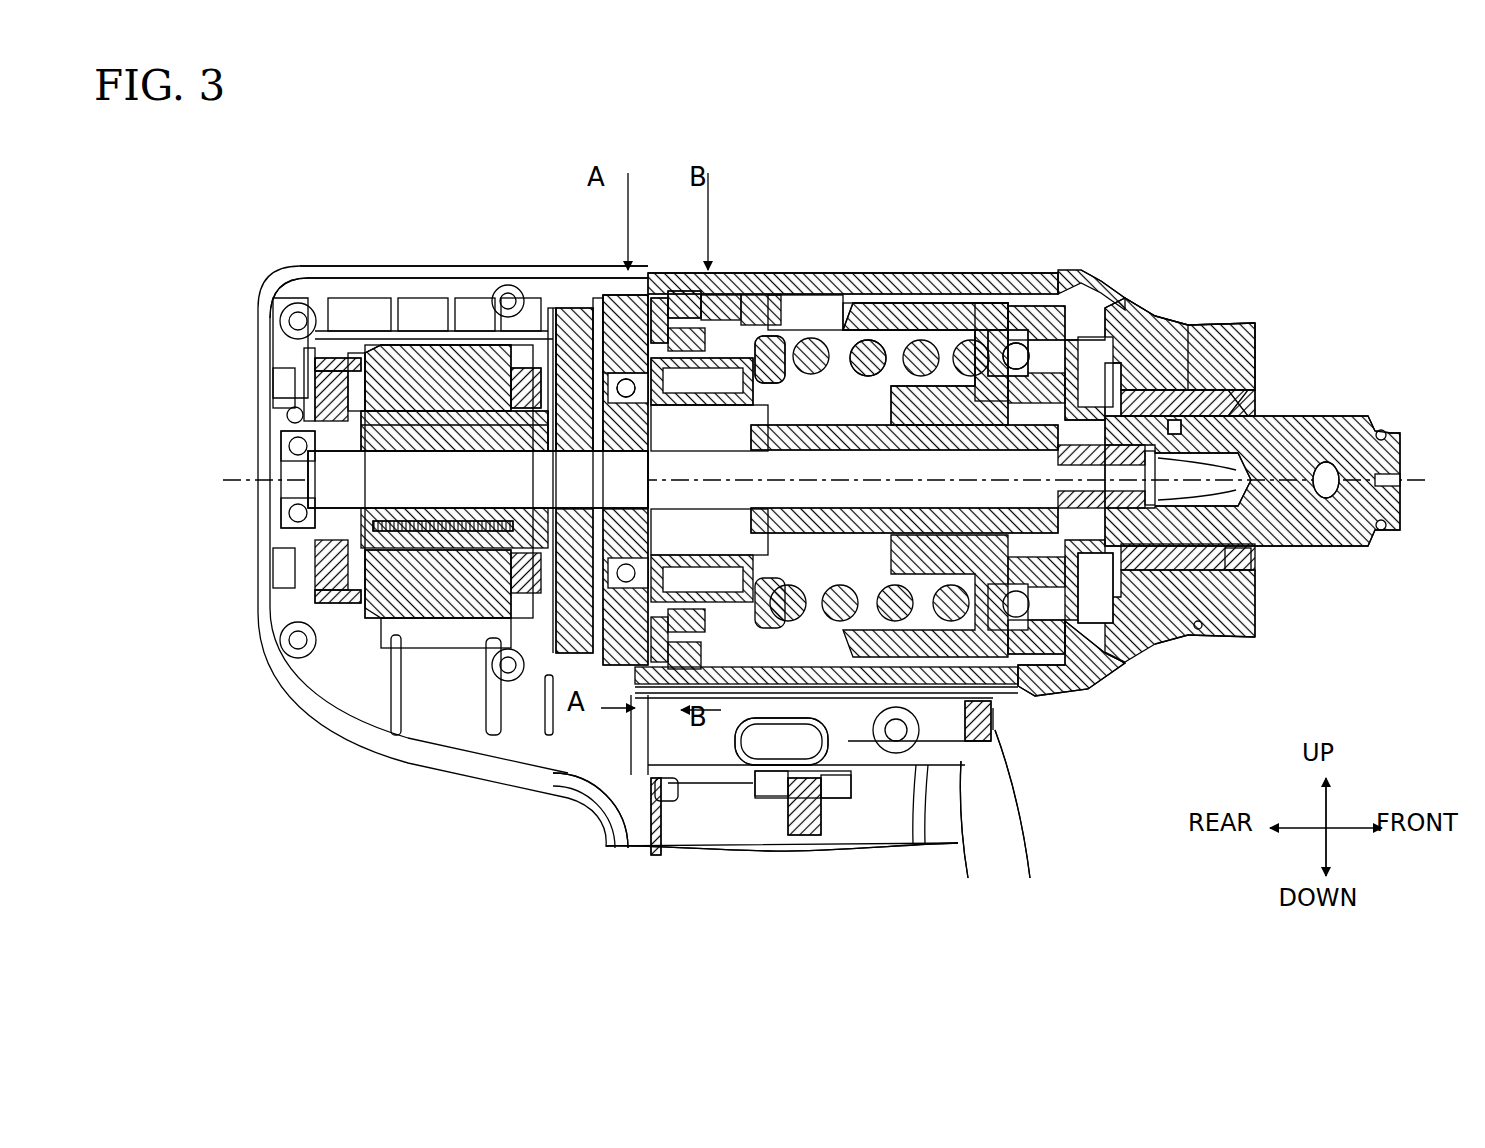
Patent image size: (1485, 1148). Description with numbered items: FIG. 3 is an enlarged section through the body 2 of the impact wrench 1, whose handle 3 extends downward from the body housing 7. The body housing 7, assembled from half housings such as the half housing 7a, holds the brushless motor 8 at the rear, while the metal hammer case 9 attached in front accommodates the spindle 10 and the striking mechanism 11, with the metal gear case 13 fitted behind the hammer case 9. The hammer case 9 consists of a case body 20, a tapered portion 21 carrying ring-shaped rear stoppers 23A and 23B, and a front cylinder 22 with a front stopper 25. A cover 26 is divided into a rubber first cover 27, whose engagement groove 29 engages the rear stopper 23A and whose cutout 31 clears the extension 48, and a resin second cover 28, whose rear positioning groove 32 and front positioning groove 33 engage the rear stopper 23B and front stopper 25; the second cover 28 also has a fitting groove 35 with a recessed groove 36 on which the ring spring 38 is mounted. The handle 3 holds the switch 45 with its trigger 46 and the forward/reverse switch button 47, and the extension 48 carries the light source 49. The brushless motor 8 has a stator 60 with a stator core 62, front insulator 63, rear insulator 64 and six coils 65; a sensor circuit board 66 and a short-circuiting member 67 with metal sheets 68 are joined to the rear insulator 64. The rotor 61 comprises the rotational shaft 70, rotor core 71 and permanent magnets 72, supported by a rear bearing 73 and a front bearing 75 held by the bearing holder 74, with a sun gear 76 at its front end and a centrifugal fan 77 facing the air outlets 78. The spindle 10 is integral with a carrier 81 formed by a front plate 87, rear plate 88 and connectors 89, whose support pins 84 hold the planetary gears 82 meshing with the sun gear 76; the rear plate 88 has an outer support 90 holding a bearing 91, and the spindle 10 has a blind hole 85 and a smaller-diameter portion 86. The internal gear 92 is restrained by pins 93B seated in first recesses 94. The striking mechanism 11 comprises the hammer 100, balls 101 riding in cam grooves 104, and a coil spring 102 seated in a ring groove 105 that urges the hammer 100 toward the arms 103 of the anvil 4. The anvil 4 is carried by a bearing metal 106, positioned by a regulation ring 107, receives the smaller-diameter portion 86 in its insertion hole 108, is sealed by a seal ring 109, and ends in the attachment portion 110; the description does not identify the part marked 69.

The impact wrench 1 is at (850, 140).
The body 2 is at (790, 250).
The handle 3 is at (598, 835).
The anvil 4 is at (1290, 410).
The body housing 7 is at (396, 262).
The half housing 7a is at (275, 290).
The brushless motor 8 is at (428, 340).
The hammer case 9 is at (905, 265).
The spindle 10 is at (870, 290).
The striking mechanism 11 is at (960, 290).
The gear case 13 is at (620, 285).
The case body 20 is at (830, 300).
The tapered portion 21 is at (1090, 275).
The front cylinder 22 is at (1260, 360).
The rear stopper 23A is at (1120, 300).
The rear stopper 23B is at (1170, 340).
The front stopper 25 is at (1220, 340).
The cover 26 is at (1085, 295).
The first cover 27 is at (1000, 285).
The second cover 28 is at (1240, 340).
The engagement groove 29 is at (1110, 320).
The cutout 31 is at (1015, 700).
The rear positioning groove 32 is at (1150, 335).
The front positioning groove 33 is at (1225, 340).
The fitting groove 35 is at (1185, 340).
The recessed groove 36 is at (1210, 630).
The ring spring 38 is at (1190, 620).
The switch 45 is at (770, 825).
The trigger 46 is at (880, 820).
The forward/reverse switch button 47 is at (800, 827).
The extension 48 is at (950, 770).
The light source 49 is at (970, 735).
The stator 60 is at (450, 345).
The rotor 61 is at (375, 285).
The stator core 62 is at (470, 405).
The front insulator 63 is at (510, 370).
The rear insulator 64 is at (350, 375).
The coil 65 is at (330, 350).
The sensor circuit board 66 is at (280, 407).
The short-circuiting member 67 is at (300, 370).
The metal sheet 68 is at (270, 378).
The rib 69 is at (480, 640).
The rotational shaft 70 is at (290, 478).
The rotor core 71 is at (425, 560).
The permanent magnet 72 is at (400, 410).
The bearing 73 is at (275, 440).
The bearing holder 74 is at (575, 630).
The bearing 75 is at (540, 625).
The sun gear 76 is at (745, 478).
The centrifugal fan 77 is at (545, 300).
The air outlet 78 is at (615, 378).
The carrier 81 is at (755, 290).
The planetary gear 82 is at (735, 290).
The support pin 84 is at (715, 355).
The axial blind hole 85 is at (865, 345).
The smaller-diameter portion 86 is at (1250, 530).
The front plate 87 is at (765, 330).
The rear plate 88 is at (645, 800).
The connector 89 is at (775, 745).
The outer support 90 is at (600, 300).
The bearing 91 is at (578, 300).
The internal gear 92 is at (700, 330).
The pin 93B is at (662, 285).
The first recess 94 is at (690, 300).
The hammer 100 is at (1000, 340).
The ball 101 is at (990, 340).
The coil spring 102 is at (815, 340).
The arm 103 is at (1050, 345).
The cam groove 104 is at (1020, 395).
The ring groove 105 is at (1030, 690).
The bearing metal 106 is at (1230, 620).
The regulation ring 107 is at (1130, 640).
The insertion hole 108 is at (1275, 430).
The seal ring 109 is at (1245, 570).
The attachment portion 110 is at (1345, 405).